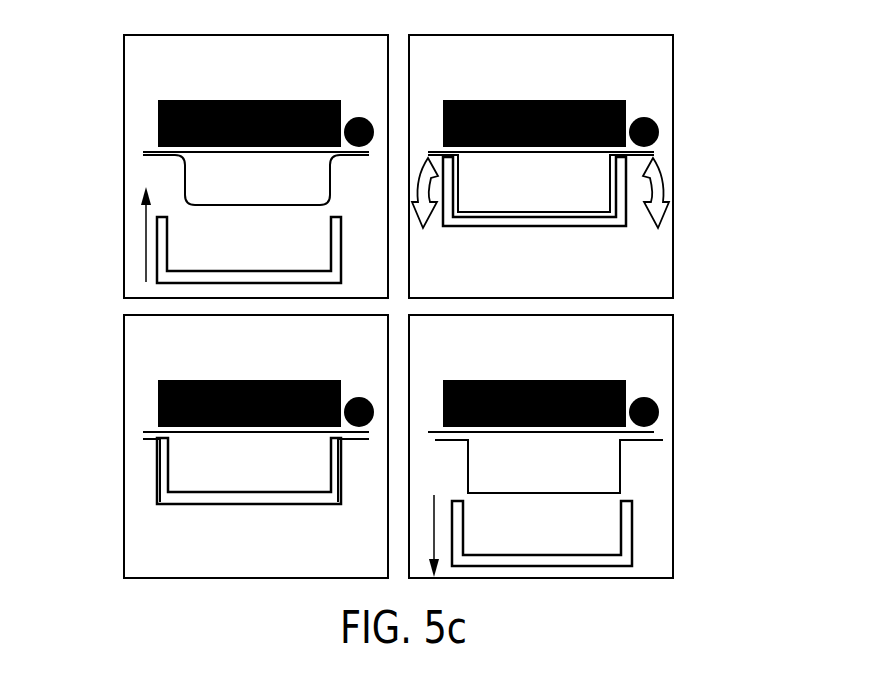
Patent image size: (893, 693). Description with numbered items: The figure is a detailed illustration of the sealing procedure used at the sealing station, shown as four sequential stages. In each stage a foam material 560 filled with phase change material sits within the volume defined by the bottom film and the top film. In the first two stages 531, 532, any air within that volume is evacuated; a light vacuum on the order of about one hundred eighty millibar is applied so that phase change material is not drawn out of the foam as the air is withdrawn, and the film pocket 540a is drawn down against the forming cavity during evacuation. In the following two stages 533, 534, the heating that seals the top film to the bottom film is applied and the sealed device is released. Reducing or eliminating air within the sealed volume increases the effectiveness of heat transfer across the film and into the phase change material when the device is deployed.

The air evacuation stage 531 is at (84, 151).
The air evacuation stage 532 is at (738, 174).
The heat sealing stage 533 is at (84, 415).
The heat sealing stage 534 is at (738, 442).
The formed tray pocket 540a is at (606, 213).
The foam material 560 is at (272, 192).